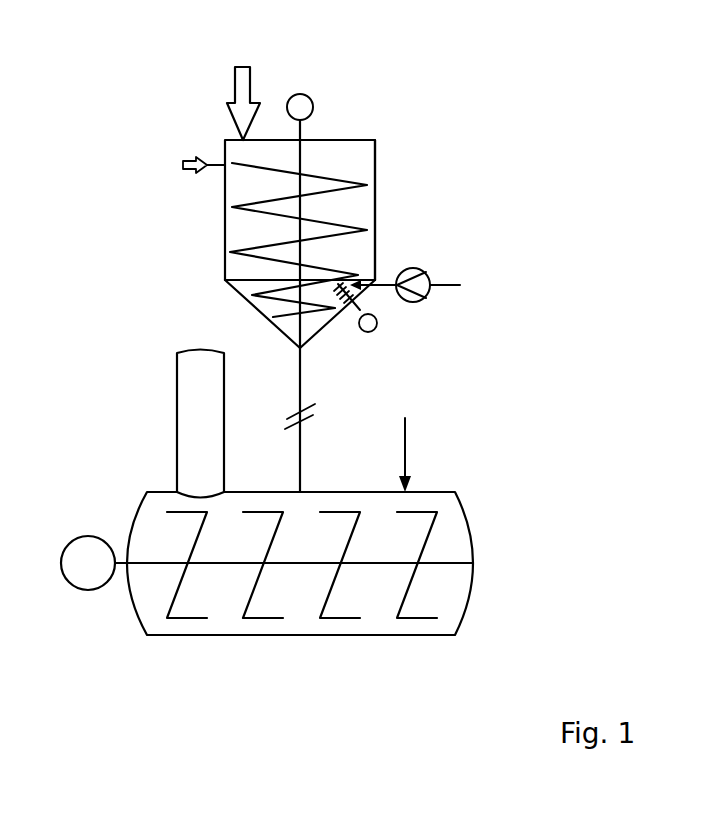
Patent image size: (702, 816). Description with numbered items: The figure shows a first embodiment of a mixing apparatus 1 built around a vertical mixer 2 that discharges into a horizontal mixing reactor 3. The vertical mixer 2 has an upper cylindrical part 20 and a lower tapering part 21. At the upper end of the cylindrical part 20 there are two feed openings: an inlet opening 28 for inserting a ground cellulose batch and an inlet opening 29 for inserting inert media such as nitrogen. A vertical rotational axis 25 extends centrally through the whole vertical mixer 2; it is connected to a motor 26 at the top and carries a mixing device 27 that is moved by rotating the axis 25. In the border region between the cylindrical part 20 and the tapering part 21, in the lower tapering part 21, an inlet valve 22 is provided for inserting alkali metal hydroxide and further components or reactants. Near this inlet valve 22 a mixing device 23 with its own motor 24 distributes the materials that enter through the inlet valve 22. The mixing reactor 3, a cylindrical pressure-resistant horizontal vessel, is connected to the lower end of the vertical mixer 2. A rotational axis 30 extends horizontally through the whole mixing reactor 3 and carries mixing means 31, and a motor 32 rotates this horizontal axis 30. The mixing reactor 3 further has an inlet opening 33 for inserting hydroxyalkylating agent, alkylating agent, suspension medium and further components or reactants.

The mixing apparatus 1 is at (112, 90).
The vertical mixer 2 is at (338, 148).
The mixing reactor 3 is at (462, 546).
The upper cylindrical part 20 is at (375, 175).
The lower tapering part 21 is at (250, 305).
The inlet valve 22 is at (413, 268).
The mixing device 23 is at (347, 297).
The motor 24 is at (376, 329).
The vertical rotational axis 25 is at (297, 233).
The motor 26 is at (302, 94).
The mixing device 27 is at (376, 140).
The inlet opening 28 is at (238, 78).
The inlet opening 29 is at (183, 165).
The rotational axis 30 is at (432, 563).
The mixing means 31 is at (437, 517).
The motor 32 is at (68, 540).
The inlet opening 33 is at (405, 442).